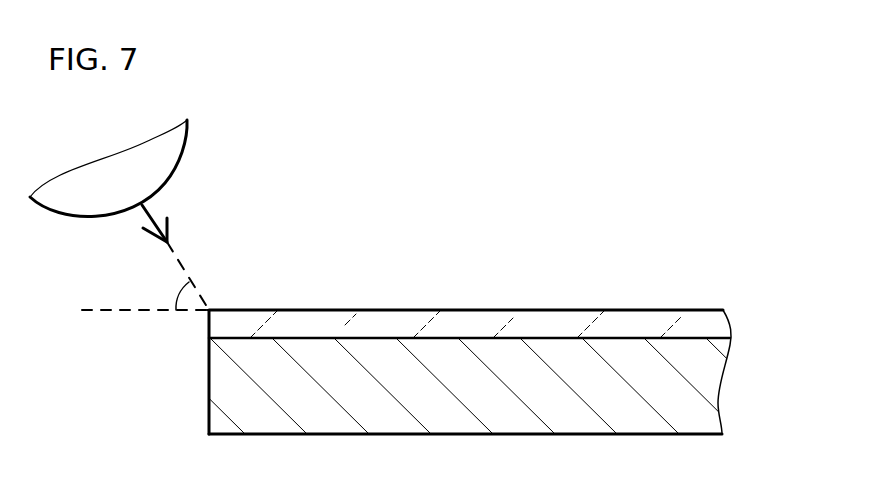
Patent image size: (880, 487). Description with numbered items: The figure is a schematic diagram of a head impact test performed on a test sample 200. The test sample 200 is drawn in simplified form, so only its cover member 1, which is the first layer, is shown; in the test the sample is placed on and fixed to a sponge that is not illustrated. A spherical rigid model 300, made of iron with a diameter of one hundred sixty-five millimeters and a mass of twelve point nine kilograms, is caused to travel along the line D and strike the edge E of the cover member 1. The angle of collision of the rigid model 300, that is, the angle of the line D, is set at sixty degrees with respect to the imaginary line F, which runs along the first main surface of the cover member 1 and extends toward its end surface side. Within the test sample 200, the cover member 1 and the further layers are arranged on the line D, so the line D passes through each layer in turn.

The test sample 200 is at (672, 259).
The cover member 1 is at (477, 327).
The spherical rigid model 300 is at (155, 169).
The line D is at (187, 263).
The edge E is at (210, 308).
The imaginary line F is at (112, 306).